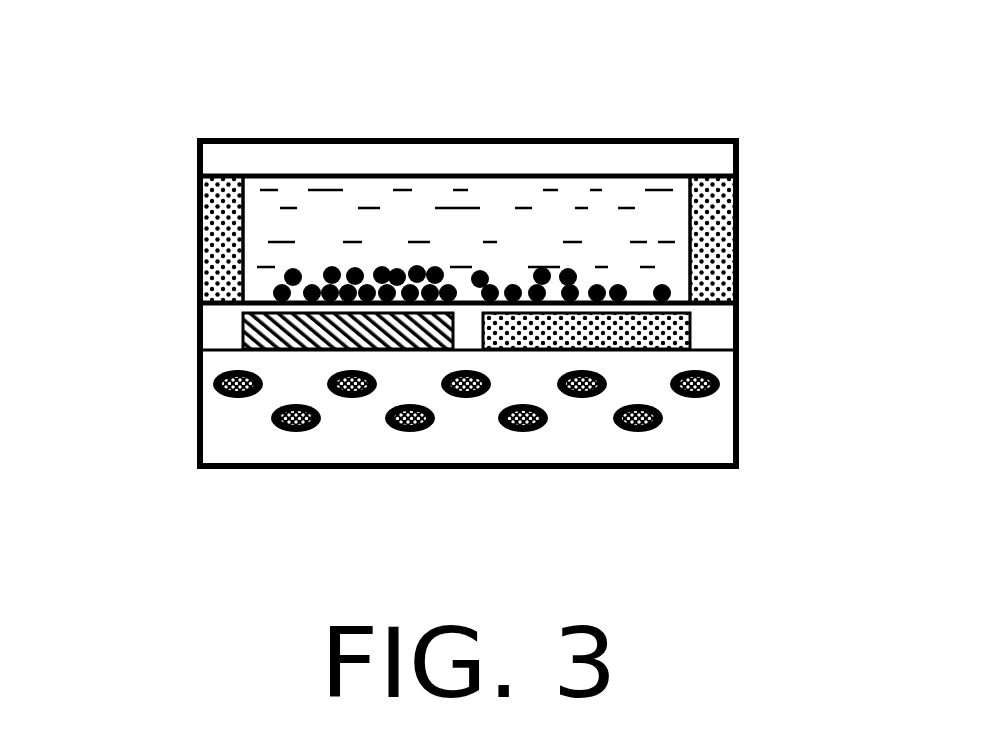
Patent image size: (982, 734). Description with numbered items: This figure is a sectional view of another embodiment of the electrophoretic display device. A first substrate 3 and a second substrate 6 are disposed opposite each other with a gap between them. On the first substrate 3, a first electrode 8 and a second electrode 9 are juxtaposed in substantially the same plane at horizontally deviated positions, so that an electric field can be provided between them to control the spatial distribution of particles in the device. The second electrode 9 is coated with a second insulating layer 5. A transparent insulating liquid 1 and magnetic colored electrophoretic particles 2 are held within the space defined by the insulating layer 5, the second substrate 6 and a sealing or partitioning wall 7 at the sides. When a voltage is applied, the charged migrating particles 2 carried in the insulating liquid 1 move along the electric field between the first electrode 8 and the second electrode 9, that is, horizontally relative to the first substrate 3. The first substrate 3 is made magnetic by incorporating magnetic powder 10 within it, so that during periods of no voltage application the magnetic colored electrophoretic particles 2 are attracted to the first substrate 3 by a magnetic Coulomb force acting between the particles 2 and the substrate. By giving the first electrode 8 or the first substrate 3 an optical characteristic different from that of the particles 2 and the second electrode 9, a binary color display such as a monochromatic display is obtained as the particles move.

The insulating liquid 1 is at (262, 231).
The magnetic colored electrophoretic particles 2 is at (388, 268).
The first substrate 3 is at (406, 464).
The second insulating layer 5 is at (720, 325).
The second substrate 6 is at (613, 165).
The sealing or partitioning wall 7 is at (705, 240).
The first electrode 8 is at (660, 325).
The second electrode 9 is at (243, 328).
The magnetic powder 10 is at (297, 430).